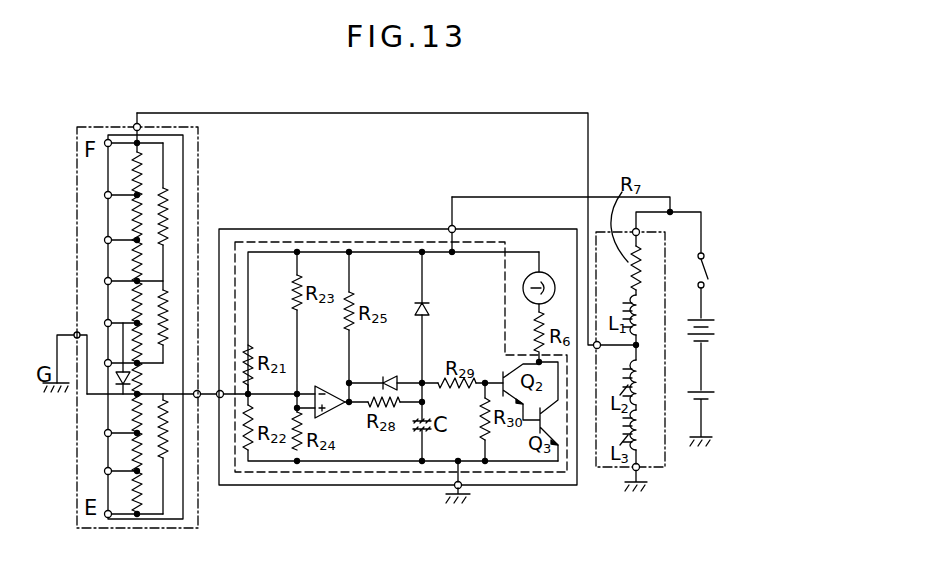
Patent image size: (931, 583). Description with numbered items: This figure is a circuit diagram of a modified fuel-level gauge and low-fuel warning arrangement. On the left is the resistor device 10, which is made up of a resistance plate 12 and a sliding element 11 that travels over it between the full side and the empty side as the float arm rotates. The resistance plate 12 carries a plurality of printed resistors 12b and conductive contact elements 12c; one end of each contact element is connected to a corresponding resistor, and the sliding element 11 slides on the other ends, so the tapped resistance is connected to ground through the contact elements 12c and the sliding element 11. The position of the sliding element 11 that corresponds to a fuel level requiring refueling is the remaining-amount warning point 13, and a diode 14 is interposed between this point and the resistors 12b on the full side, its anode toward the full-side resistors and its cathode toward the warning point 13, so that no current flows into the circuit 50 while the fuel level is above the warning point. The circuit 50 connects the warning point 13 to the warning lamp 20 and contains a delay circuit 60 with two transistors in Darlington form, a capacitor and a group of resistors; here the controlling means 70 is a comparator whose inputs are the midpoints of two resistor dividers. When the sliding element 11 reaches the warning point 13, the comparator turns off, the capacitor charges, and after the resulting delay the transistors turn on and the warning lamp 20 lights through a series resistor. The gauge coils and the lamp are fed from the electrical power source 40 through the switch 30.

The resistor device 10 is at (176, 124).
The sliding element 11 is at (101, 398).
The resistance plate 12 is at (133, 124).
The resistors 12b is at (148, 181).
The conductive contact elements 12c is at (118, 206).
The remaining-amount warning point 13 is at (102, 392).
The diode 14 is at (135, 378).
The warning lamp 20 is at (553, 270).
The switch 30 is at (706, 266).
The electrical power source 40 is at (712, 328).
The circuit 50 is at (388, 487).
The delay circuit 60 is at (343, 243).
The controlling means 70 is at (326, 354).